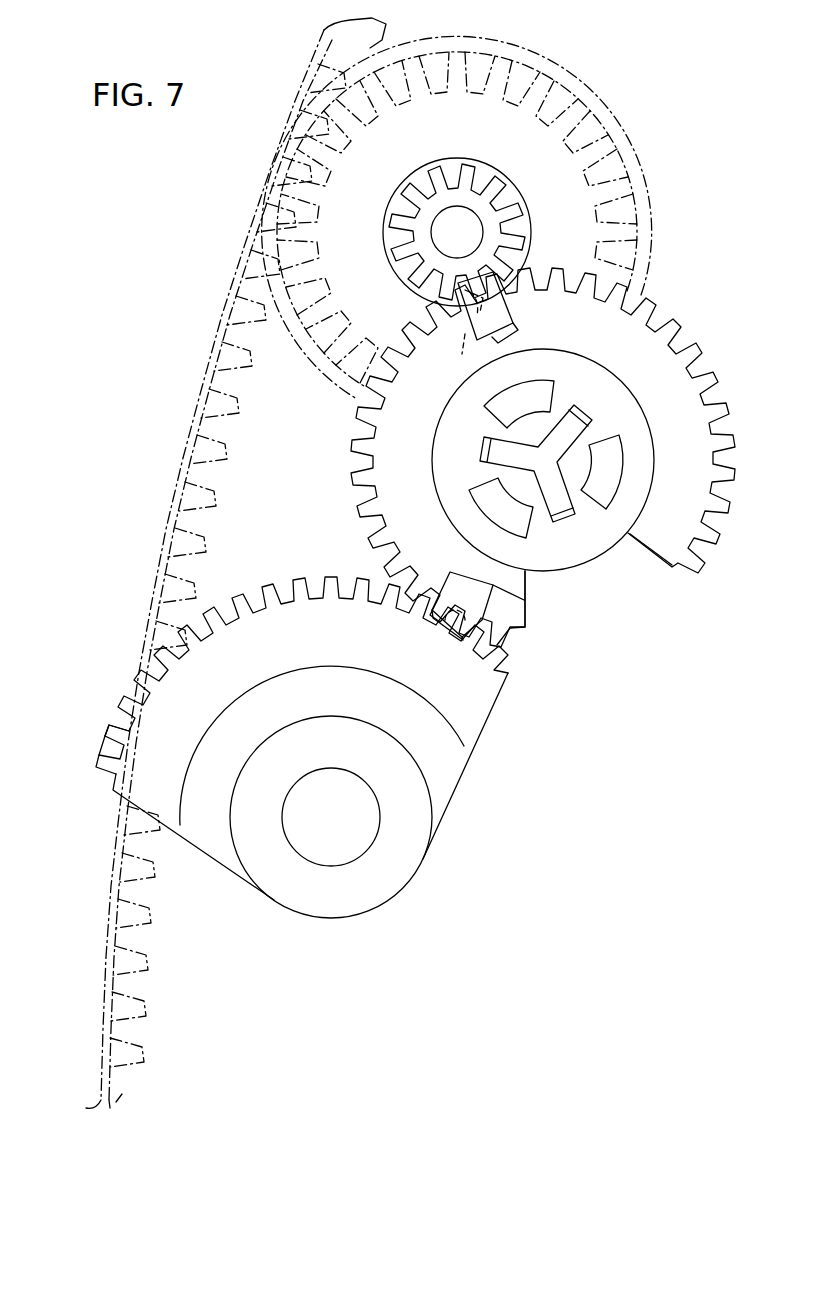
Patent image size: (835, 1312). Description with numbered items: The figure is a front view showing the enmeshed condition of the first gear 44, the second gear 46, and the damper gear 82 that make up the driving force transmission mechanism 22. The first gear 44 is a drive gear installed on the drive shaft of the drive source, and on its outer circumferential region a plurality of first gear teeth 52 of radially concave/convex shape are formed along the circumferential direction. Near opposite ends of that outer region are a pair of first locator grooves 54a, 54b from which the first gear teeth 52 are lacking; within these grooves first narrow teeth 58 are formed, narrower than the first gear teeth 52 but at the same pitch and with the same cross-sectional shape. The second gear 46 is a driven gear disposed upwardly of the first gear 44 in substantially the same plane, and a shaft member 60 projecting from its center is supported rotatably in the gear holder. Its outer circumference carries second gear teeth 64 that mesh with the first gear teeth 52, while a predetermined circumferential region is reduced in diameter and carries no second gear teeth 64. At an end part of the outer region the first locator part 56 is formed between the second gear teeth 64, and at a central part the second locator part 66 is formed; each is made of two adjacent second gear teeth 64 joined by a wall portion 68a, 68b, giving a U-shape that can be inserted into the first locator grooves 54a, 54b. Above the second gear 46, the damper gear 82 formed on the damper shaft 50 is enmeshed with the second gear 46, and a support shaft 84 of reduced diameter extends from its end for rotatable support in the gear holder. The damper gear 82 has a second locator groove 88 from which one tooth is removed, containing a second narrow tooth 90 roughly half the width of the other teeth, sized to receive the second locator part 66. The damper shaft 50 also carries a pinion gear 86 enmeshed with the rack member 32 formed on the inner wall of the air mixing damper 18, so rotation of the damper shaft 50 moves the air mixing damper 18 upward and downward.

The air mixing damper 18 is at (195, 368).
The driving force transmission mechanism 22 is at (295, 547).
The rack member 32 is at (235, 412).
The first gear 44 is at (467, 790).
The second gear 46 is at (685, 317).
The damper shaft 50 is at (528, 190).
The first gear teeth 52 is at (333, 572).
The first locator groove 54a is at (465, 632).
The first locator groove 54b is at (118, 753).
The first locator part 56 is at (452, 582).
The first narrow teeth 58 is at (452, 625).
The shaft member 60 is at (617, 463).
The second gear teeth 64 is at (722, 507).
The second locator part 66 is at (500, 310).
The wall portion 68a is at (490, 590).
The wall portion 68b is at (510, 330).
The damper gear 82 is at (415, 285).
The support shaft 84 is at (448, 227).
The pinion gear 86 is at (603, 100).
The second locator groove 88 is at (495, 277).
The second narrow tooth 90 is at (458, 352).